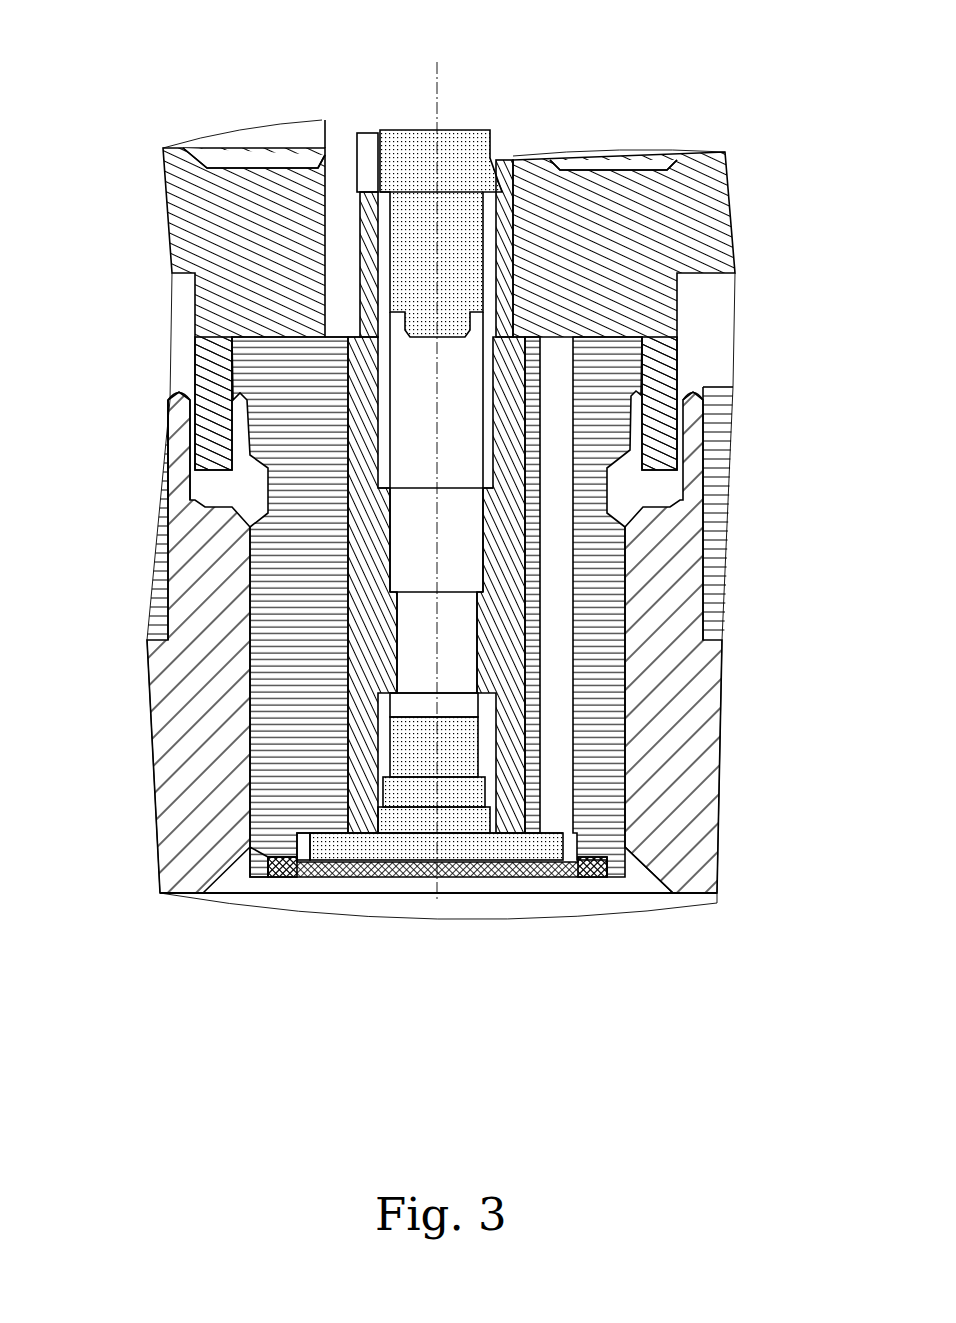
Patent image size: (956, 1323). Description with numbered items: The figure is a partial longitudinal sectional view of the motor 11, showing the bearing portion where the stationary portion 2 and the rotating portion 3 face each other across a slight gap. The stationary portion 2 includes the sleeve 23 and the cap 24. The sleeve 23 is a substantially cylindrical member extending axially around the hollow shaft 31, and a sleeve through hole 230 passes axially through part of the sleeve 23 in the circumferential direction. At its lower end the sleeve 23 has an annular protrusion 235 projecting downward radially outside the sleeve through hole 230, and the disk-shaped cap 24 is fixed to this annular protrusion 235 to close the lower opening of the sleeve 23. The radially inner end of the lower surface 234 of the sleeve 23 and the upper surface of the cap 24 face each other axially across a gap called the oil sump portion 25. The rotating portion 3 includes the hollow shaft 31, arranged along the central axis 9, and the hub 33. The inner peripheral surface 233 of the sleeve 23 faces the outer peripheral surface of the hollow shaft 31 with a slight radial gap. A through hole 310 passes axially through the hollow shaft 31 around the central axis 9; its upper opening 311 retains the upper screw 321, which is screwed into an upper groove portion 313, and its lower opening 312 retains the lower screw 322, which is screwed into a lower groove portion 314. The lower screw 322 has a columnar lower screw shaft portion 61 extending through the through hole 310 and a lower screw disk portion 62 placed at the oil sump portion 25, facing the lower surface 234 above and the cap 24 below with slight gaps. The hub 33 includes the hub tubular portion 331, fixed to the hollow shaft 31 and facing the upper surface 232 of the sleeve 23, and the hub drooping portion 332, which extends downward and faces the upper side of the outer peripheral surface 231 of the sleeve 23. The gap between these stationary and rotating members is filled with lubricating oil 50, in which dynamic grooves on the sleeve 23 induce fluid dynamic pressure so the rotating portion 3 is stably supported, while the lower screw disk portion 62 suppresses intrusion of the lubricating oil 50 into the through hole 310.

The stationary portion 2 is at (641, 874).
The rotating portion 3 is at (235, 160).
The central axis 9 is at (437, 72).
The motor 11 is at (548, 95).
The sleeve 23 is at (297, 705).
The cap 24 is at (325, 877).
The oil sump portion 25 is at (570, 852).
The hollow shaft 31 is at (375, 505).
The hub 33 is at (627, 227).
The lubricating oil 50 is at (194, 414).
The lower screw shaft portion 61 is at (393, 728).
The lower screw disk portion 62 is at (425, 847).
The sleeve through hole 230 is at (600, 345).
The outer peripheral surface of the sleeve 231 is at (240, 455).
The upper surface of the sleeve 232 is at (280, 333).
The inner peripheral surface of the sleeve 233 is at (554, 470).
The lower surface of the sleeve 234 is at (283, 877).
The annular protrusion 235 is at (258, 850).
The through hole 310 is at (453, 611).
The upper opening 311 is at (468, 180).
The lower opening 312 is at (462, 832).
The upper groove portion 313 is at (433, 232).
The lower groove portion 314 is at (403, 735).
The upper screw 321 is at (407, 128).
The lower screw 322 is at (415, 996).
The hub tubular portion 331 is at (300, 220).
The hub drooping portion 332 is at (188, 392).